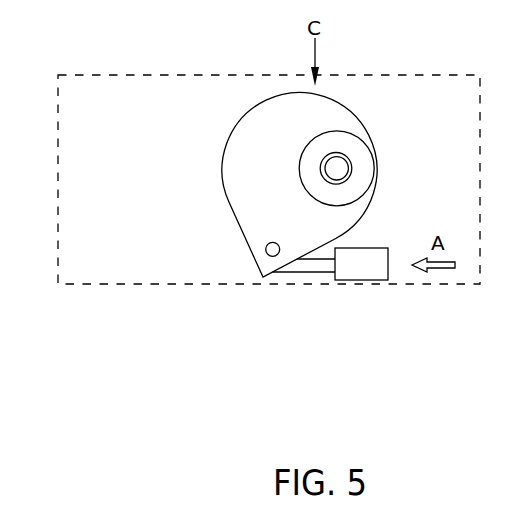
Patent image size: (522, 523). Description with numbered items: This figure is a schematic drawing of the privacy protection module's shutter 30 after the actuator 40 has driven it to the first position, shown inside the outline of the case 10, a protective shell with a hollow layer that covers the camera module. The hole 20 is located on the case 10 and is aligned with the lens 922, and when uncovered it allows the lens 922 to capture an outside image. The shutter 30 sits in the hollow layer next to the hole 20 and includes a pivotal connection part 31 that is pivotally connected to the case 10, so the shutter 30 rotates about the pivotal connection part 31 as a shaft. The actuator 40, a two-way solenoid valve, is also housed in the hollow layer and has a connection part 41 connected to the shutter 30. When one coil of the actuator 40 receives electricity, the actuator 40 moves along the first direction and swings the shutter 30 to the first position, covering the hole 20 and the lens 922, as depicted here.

The case 10 is at (58, 145).
The hole 20 is at (338, 131).
The shutter 30 is at (242, 136).
The pivotal connection part 31 is at (266, 250).
The actuator 40 is at (352, 272).
The connection part 41 is at (310, 263).
The lens 922 is at (352, 169).